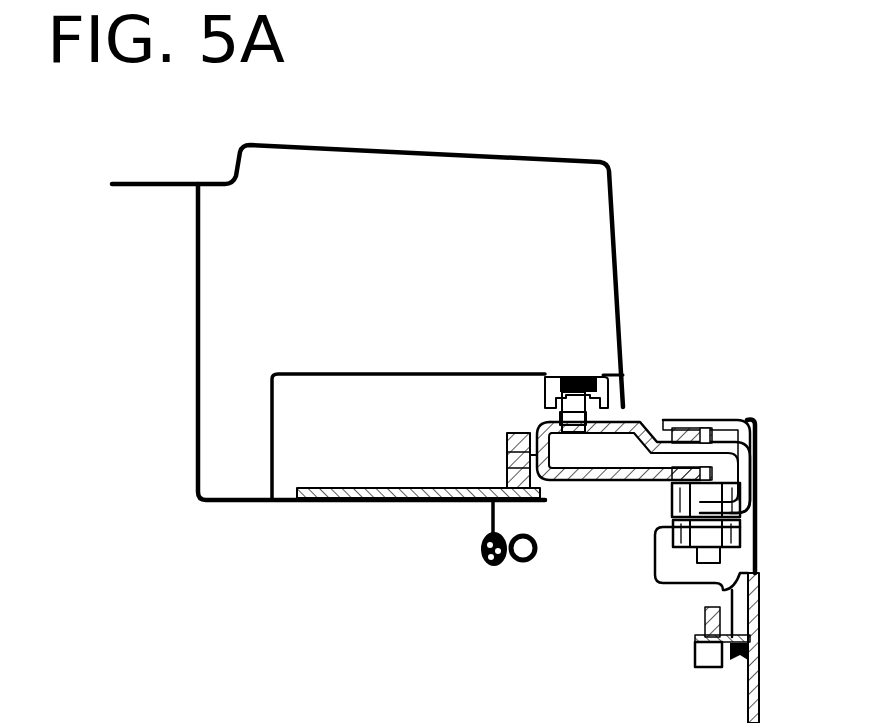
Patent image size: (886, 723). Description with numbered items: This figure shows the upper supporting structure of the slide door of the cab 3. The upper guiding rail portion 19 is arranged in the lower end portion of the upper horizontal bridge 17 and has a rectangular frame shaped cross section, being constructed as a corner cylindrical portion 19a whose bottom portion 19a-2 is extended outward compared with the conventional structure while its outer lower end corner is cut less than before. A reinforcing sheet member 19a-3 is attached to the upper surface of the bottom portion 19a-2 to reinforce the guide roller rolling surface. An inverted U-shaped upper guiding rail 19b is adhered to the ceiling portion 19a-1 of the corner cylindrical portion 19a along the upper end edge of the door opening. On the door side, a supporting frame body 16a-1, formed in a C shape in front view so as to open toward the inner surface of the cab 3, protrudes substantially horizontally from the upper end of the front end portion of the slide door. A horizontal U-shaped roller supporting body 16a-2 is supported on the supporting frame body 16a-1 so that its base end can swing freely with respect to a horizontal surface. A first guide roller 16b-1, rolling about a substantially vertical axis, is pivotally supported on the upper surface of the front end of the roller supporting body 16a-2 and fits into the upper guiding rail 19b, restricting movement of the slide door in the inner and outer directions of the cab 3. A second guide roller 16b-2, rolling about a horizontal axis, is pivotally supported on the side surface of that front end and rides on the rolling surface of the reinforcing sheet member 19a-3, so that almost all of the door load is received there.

The cab 3 is at (690, 142).
The upper horizontal bridge 17 is at (617, 222).
The upper guiding rail portion 19 is at (661, 391).
The corner cylindrical portion 19a is at (505, 451).
The ceiling portion 19a-1 is at (420, 372).
The bottom portion 19a-2 is at (335, 505).
The reinforcing sheet member 19a-3 is at (378, 488).
The upper guiding rail 19b is at (630, 377).
The supporting frame body 16a-1 is at (718, 420).
The roller supporting body 16a-2 is at (613, 483).
The first guide roller 16b-1 is at (560, 372).
The second guide roller 16b-2 is at (495, 483).